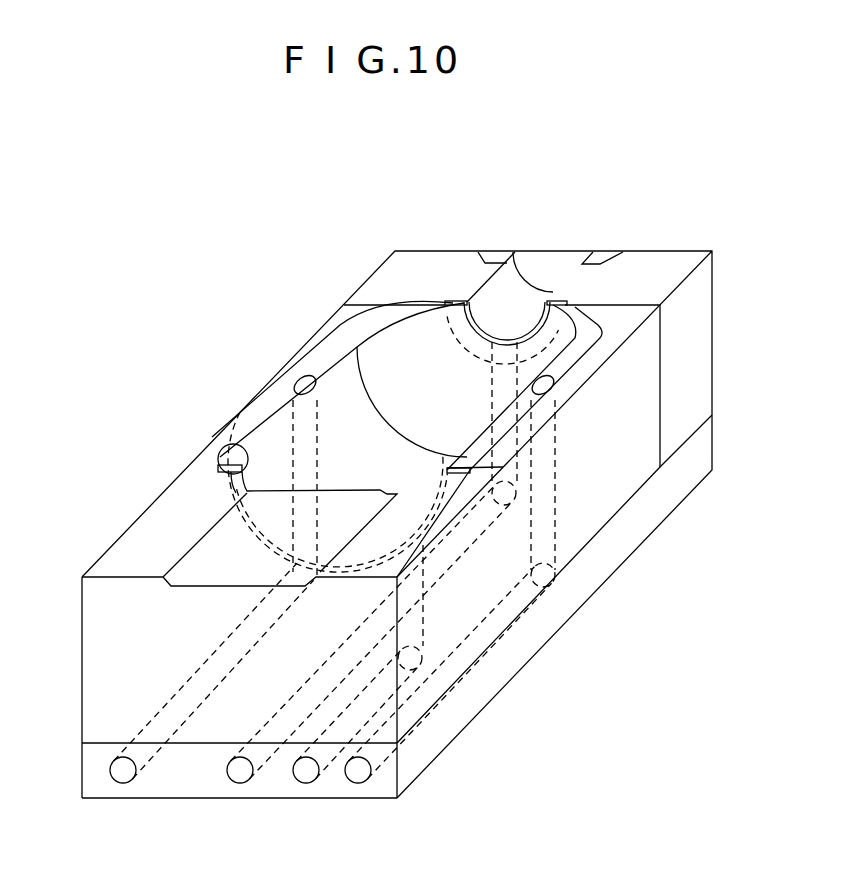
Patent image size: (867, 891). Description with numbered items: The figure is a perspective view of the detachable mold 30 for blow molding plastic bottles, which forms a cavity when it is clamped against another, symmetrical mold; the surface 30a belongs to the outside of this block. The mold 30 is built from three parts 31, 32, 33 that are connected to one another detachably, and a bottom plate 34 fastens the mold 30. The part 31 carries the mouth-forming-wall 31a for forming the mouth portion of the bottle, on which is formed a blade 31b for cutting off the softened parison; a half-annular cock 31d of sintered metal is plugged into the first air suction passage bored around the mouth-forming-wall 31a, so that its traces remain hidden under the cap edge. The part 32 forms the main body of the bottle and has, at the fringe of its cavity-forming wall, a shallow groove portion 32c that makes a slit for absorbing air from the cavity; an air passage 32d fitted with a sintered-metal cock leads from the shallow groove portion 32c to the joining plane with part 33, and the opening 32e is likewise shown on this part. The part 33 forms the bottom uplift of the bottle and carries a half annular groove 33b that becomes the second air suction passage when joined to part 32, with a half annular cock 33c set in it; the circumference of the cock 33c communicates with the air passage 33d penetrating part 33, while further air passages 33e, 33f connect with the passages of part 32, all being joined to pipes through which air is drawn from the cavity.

The mold 30 is at (645, 562).
The side surface of unit 30a is at (547, 625).
The part 31 is at (382, 262).
The mouth-forming-wall 31a is at (487, 302).
The blade 31b is at (552, 295).
The half-annular cock 31d is at (552, 293).
The part 32 is at (571, 548).
The shallow groove portion 32c is at (328, 357).
The air passage 32d is at (237, 411).
The through hole 32e is at (300, 380).
The part 33 is at (92, 625).
The half annular groove 33b is at (247, 458).
The half annular cock 33c is at (225, 482).
The air passage 33d is at (300, 782).
The air passage 33e is at (122, 782).
The air passage 33f is at (238, 782).
The bottom plate 34 is at (430, 750).